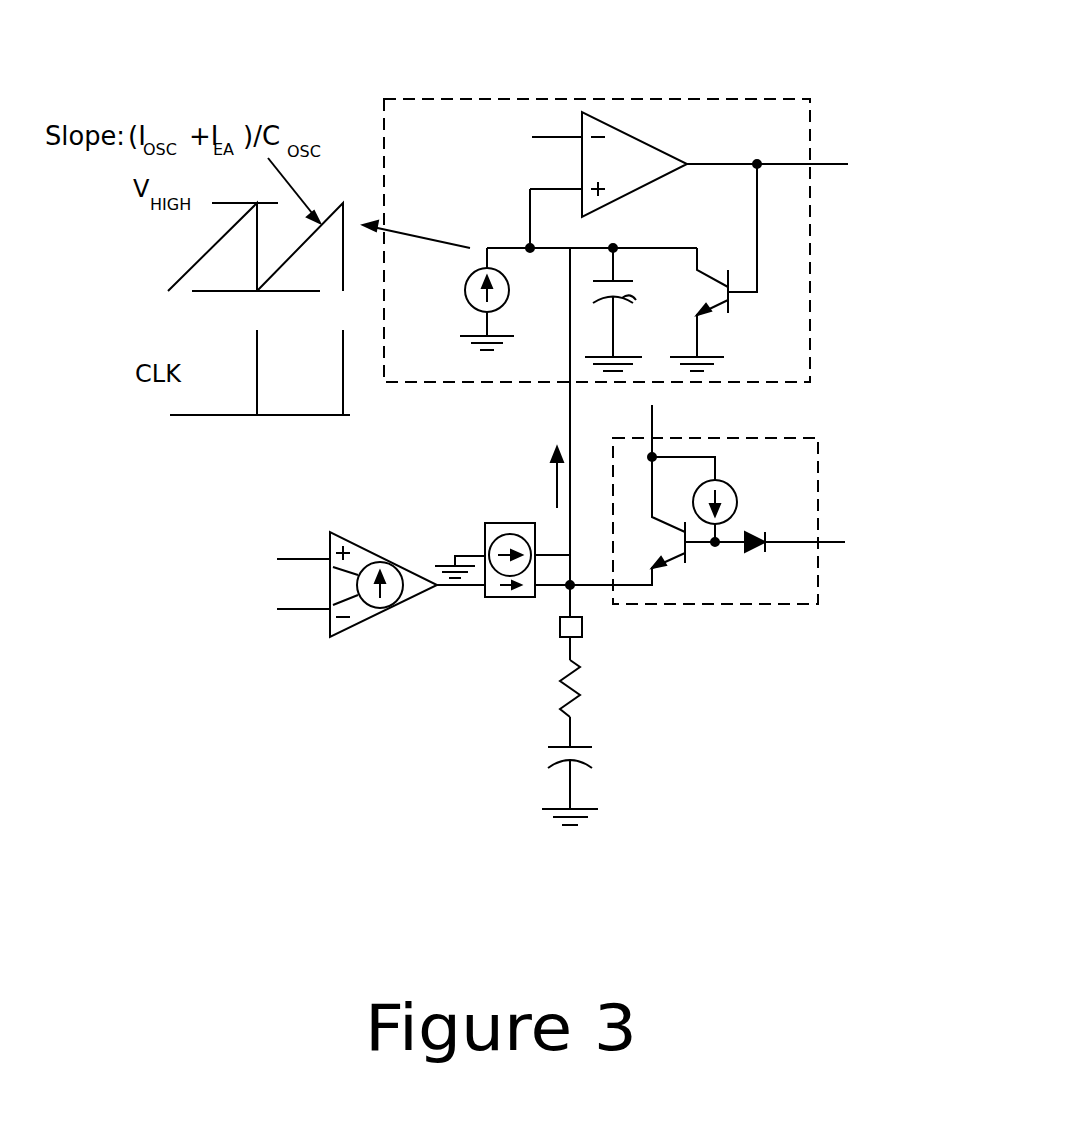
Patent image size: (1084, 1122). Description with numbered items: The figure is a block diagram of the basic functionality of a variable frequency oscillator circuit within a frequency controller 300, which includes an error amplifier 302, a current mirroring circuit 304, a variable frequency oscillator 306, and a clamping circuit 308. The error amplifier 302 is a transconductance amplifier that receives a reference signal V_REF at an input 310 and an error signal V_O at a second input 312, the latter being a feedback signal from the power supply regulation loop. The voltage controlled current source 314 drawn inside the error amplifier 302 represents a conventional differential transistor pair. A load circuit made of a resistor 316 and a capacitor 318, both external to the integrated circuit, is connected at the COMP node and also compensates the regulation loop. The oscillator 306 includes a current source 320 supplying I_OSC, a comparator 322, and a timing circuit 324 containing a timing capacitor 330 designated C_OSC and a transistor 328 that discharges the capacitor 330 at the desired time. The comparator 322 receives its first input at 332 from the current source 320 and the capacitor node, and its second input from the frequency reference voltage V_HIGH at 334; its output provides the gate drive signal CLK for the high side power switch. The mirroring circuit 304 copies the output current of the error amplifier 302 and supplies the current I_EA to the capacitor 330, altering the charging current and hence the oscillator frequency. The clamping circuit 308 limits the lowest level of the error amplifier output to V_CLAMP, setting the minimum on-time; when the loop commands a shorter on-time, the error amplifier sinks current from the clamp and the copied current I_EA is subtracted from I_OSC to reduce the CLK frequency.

The frequency controller 300 is at (905, 422).
The error amplifier 302 is at (360, 540).
The current mirroring circuit 304 is at (485, 540).
The variable frequency oscillator 306 is at (730, 98).
The clamping circuit 308 is at (818, 484).
The input 310 is at (283, 559).
The second input 312 is at (285, 612).
The voltage controlled current source 314 is at (405, 598).
The resistor 316 is at (558, 684).
The capacitor 318 is at (548, 757).
The current source 320 is at (477, 312).
The comparator 322 is at (605, 120).
The timing circuit 324 is at (678, 245).
The transistor 328 is at (718, 315).
The timing capacitor 330 is at (623, 305).
The first input 332 is at (530, 209).
The high threshold voltage input 334 is at (535, 137).